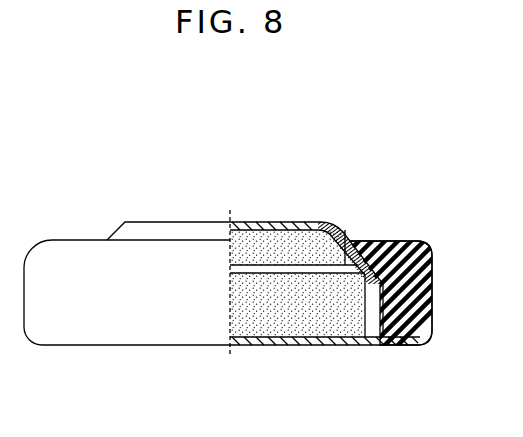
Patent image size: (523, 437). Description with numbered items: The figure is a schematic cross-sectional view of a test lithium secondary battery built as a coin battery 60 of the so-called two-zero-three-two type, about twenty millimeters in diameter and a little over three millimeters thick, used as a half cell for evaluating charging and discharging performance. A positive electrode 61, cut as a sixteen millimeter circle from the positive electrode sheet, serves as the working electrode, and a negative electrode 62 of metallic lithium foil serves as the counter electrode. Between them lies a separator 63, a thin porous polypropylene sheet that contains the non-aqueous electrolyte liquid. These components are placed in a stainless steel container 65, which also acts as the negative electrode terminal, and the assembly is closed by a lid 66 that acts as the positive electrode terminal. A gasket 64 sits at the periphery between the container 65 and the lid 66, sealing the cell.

The coin battery 60 is at (424, 189).
The positive electrode 61 is at (280, 231).
The negative electrode 62 is at (310, 333).
The separator 63 is at (316, 263).
The gasket 64 is at (432, 273).
The container 65 is at (157, 330).
The lid 66 is at (172, 222).